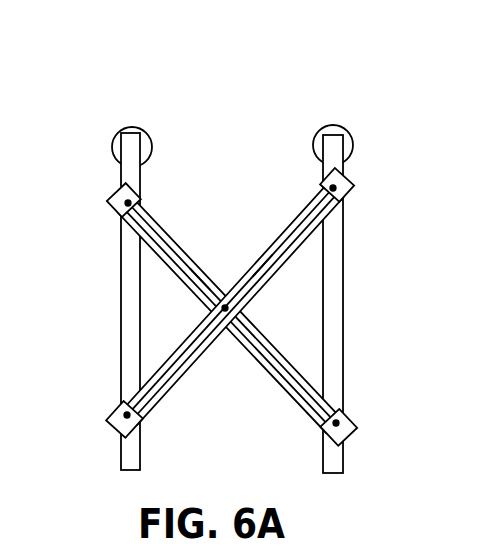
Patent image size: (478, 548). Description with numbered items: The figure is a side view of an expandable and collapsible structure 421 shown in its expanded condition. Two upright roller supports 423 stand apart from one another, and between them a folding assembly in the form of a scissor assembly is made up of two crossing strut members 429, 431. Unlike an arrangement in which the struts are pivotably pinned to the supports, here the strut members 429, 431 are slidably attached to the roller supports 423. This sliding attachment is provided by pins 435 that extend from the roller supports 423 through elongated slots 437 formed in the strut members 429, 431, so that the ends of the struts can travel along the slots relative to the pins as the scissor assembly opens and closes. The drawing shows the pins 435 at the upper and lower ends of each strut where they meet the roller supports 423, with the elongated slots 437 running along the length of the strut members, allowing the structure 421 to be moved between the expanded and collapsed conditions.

The structure 421 is at (227, 109).
The roller support 423 is at (121, 311).
The strut member 429 is at (284, 227).
The strut member 431 is at (173, 223).
The pin 435 is at (120, 206).
The elongated slot 437 is at (183, 267).